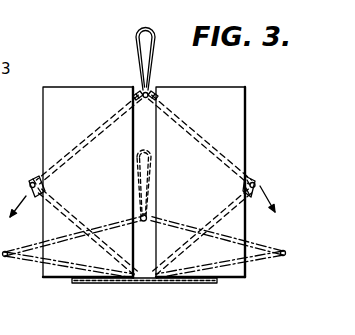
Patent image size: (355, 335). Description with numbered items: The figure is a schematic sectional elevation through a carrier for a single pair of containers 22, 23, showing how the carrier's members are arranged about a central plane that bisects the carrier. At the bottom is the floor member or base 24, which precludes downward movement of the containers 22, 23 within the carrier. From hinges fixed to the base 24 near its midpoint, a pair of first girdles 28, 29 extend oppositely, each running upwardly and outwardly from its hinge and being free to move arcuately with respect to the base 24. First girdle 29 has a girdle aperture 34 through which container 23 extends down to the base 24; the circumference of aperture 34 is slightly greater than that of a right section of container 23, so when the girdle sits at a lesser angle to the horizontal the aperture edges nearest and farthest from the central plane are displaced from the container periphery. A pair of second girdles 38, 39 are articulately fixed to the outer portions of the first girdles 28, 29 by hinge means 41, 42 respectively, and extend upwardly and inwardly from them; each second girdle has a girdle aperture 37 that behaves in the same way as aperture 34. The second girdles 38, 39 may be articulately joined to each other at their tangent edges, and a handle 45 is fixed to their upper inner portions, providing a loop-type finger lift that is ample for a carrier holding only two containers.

The container 22 is at (225, 87).
The container 23 is at (78, 100).
The floor member or base 24 is at (185, 283).
The first girdle 28 is at (264, 213).
The first girdle 29 is at (21, 218).
The girdle aperture 34 is at (45, 190).
The girdle aperture 37 is at (44, 178).
The second girdle 38 is at (251, 174).
The second girdle 39 is at (38, 178).
The hinge means 41 is at (254, 183).
The hinge means 42 is at (33, 182).
The handle 45 is at (155, 37).